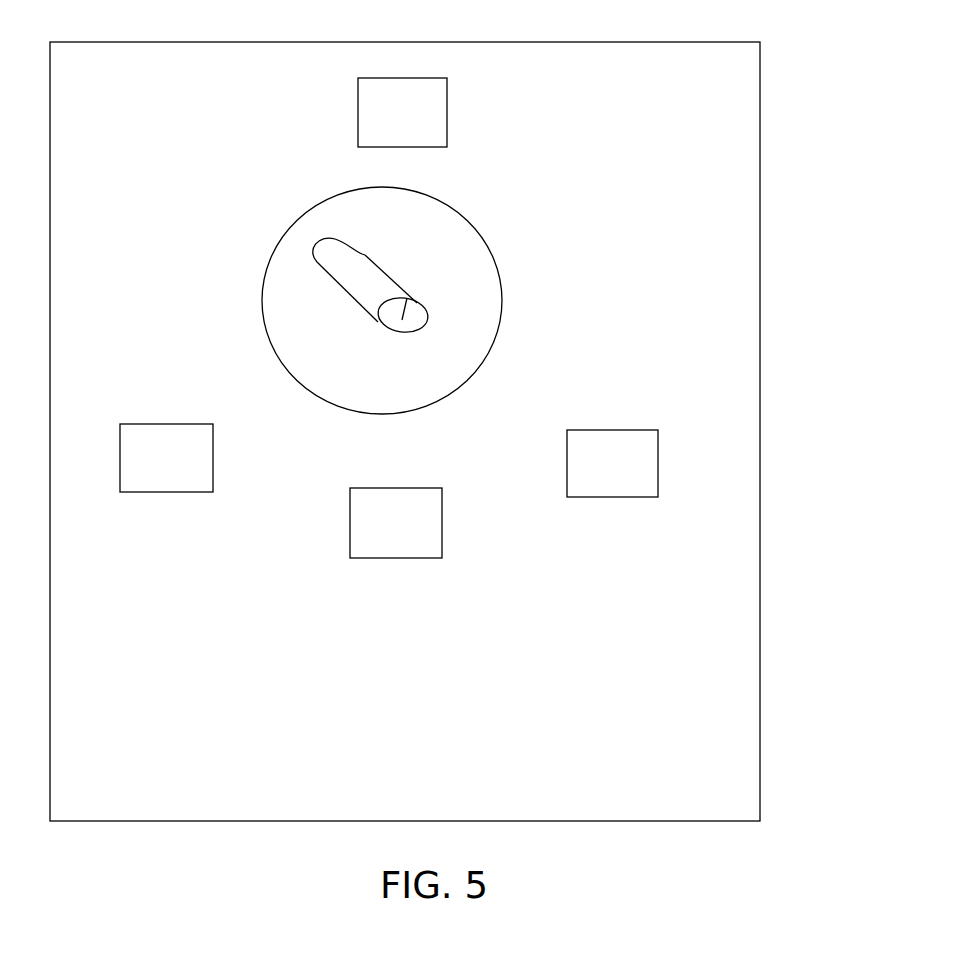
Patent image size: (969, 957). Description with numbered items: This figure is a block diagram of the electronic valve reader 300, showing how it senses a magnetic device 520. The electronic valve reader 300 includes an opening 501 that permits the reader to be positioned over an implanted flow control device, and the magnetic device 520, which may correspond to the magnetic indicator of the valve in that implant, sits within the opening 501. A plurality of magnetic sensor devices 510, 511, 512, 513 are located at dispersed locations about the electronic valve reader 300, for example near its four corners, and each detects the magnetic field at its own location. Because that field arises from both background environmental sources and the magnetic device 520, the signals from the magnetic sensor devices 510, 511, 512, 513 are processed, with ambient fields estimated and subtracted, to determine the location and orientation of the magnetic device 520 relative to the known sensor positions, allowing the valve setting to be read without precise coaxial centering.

The electronic valve reader 300 is at (760, 172).
The opening 501 is at (505, 295).
The magnetic sensor device 510 is at (447, 120).
The magnetic sensor device 511 is at (165, 492).
The magnetic sensor device 512 is at (393, 558).
The magnetic sensor device 513 is at (612, 497).
The magnetic device 520 is at (387, 292).